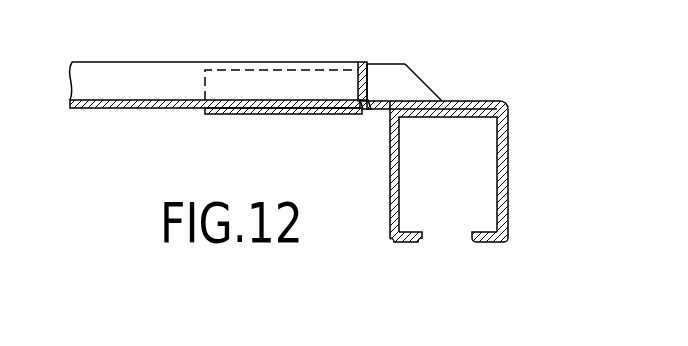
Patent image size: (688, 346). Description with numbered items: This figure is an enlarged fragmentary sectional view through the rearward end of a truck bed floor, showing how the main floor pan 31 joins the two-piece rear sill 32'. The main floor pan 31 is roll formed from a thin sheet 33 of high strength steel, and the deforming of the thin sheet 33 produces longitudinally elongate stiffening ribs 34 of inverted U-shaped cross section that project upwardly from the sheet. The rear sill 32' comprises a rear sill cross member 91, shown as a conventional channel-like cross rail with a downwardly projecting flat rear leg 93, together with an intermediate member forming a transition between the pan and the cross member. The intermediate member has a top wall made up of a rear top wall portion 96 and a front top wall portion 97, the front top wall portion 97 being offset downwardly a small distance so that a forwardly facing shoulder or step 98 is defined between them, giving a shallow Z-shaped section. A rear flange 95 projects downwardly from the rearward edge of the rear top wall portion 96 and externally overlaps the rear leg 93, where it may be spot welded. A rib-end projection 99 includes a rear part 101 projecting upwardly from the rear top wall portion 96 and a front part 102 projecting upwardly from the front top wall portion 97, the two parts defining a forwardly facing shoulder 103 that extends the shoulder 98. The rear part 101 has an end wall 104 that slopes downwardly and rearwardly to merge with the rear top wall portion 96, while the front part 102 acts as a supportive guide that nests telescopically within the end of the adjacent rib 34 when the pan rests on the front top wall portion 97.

The main floor pan 31 is at (118, 112).
The thin sheet 33 is at (206, 92).
The stiffening rib 34 is at (208, 28).
The front top wall portion 97 is at (276, 114).
The shoulder 98 is at (369, 113).
The front part 102 is at (242, 70).
The shoulder 103 is at (362, 82).
The rear part 101 is at (420, 54).
The rib-end projection 99 is at (422, 72).
The end wall 104 is at (437, 100).
The rear leg 93 is at (496, 160).
The rear top wall portion 96 is at (488, 101).
The rear sill cross member 91 is at (390, 228).
The rear flange 95 is at (510, 138).
The rear sill 32' is at (546, 70).